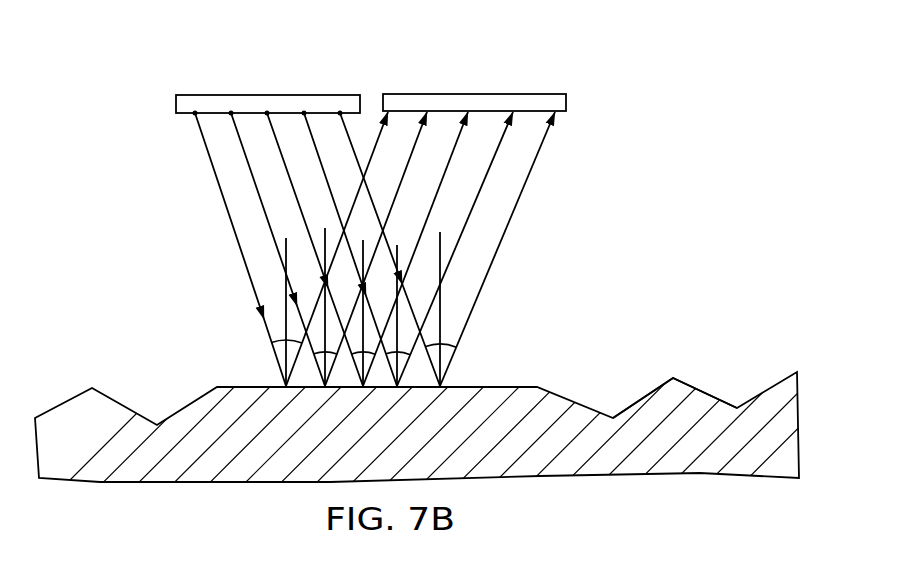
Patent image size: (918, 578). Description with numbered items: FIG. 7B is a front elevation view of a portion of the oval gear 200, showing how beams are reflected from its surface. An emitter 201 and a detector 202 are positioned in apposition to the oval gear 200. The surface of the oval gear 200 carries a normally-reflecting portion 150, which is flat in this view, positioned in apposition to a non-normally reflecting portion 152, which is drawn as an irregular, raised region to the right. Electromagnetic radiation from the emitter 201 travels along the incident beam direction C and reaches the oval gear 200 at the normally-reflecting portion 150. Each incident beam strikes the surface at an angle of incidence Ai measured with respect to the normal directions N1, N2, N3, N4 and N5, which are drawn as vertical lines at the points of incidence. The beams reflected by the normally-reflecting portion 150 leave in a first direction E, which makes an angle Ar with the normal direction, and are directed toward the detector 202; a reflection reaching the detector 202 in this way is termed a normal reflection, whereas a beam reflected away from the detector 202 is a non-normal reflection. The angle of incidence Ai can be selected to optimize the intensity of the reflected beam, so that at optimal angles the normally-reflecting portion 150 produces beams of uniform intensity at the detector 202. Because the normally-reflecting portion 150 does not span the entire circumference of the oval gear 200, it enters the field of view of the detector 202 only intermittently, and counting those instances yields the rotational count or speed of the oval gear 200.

The oval gear 200 is at (537, 385).
The normally-reflecting portion 150 is at (480, 385).
The non-normally reflecting portion 152 is at (687, 382).
The emitter 201 is at (197, 94).
The detector 202 is at (512, 93).
The incident beam direction C is at (197, 127).
The first direction E is at (378, 145).
The normal direction N1 is at (284, 296).
The normal direction N2 is at (320, 293).
The normal direction N3 is at (366, 300).
The normal direction N4 is at (406, 302).
The normal direction N5 is at (450, 297).
The angle of incidence Ai is at (275, 343).
The angle of reflection Ar is at (455, 345).